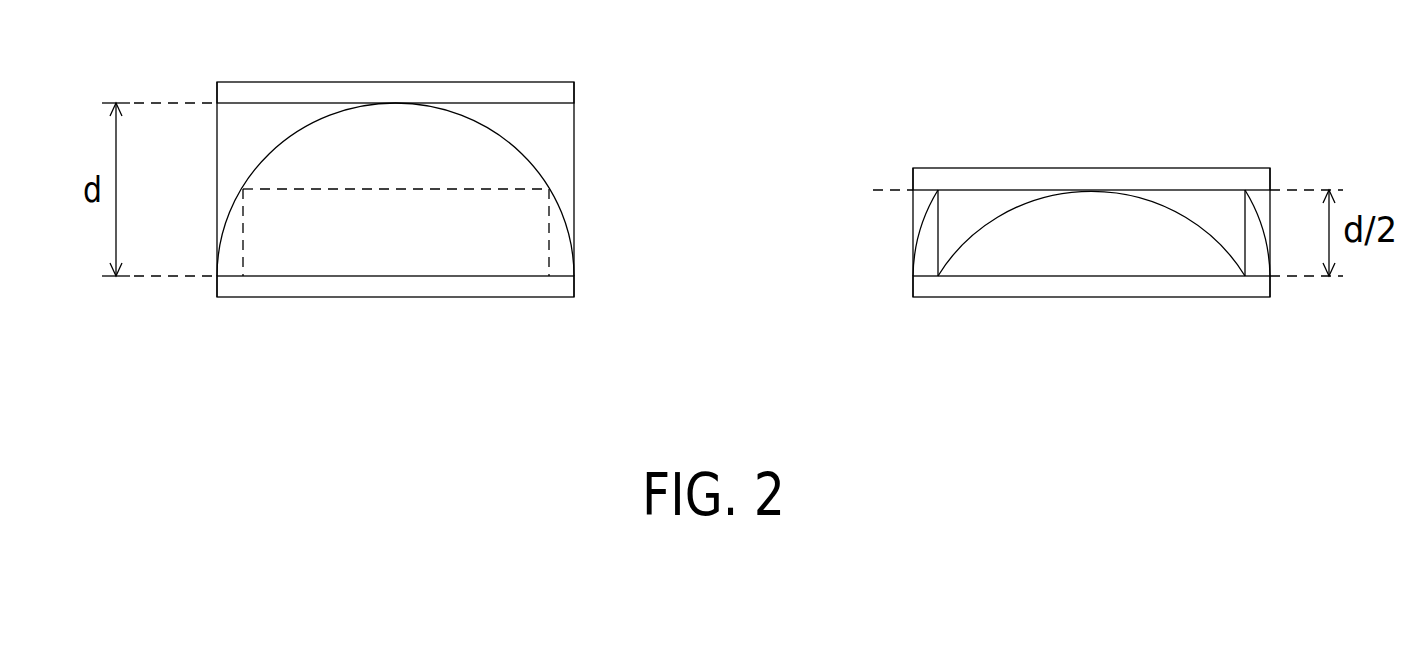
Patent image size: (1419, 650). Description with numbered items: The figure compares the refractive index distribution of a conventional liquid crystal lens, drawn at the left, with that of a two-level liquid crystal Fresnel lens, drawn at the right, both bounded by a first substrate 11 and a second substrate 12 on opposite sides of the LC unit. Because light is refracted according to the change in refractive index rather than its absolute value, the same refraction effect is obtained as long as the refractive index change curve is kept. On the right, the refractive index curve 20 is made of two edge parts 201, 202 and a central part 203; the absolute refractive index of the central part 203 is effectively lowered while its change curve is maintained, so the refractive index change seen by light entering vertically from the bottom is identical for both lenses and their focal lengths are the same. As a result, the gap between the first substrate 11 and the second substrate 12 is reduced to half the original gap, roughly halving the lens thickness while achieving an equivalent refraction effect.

The first substrate 11 is at (576, 287).
The second substrate 12 is at (576, 96).
The refractive index curve 20 is at (1295, 358).
The edge part 201 is at (925, 220).
The edge part 202 is at (1258, 200).
The central part 203 is at (1143, 193).